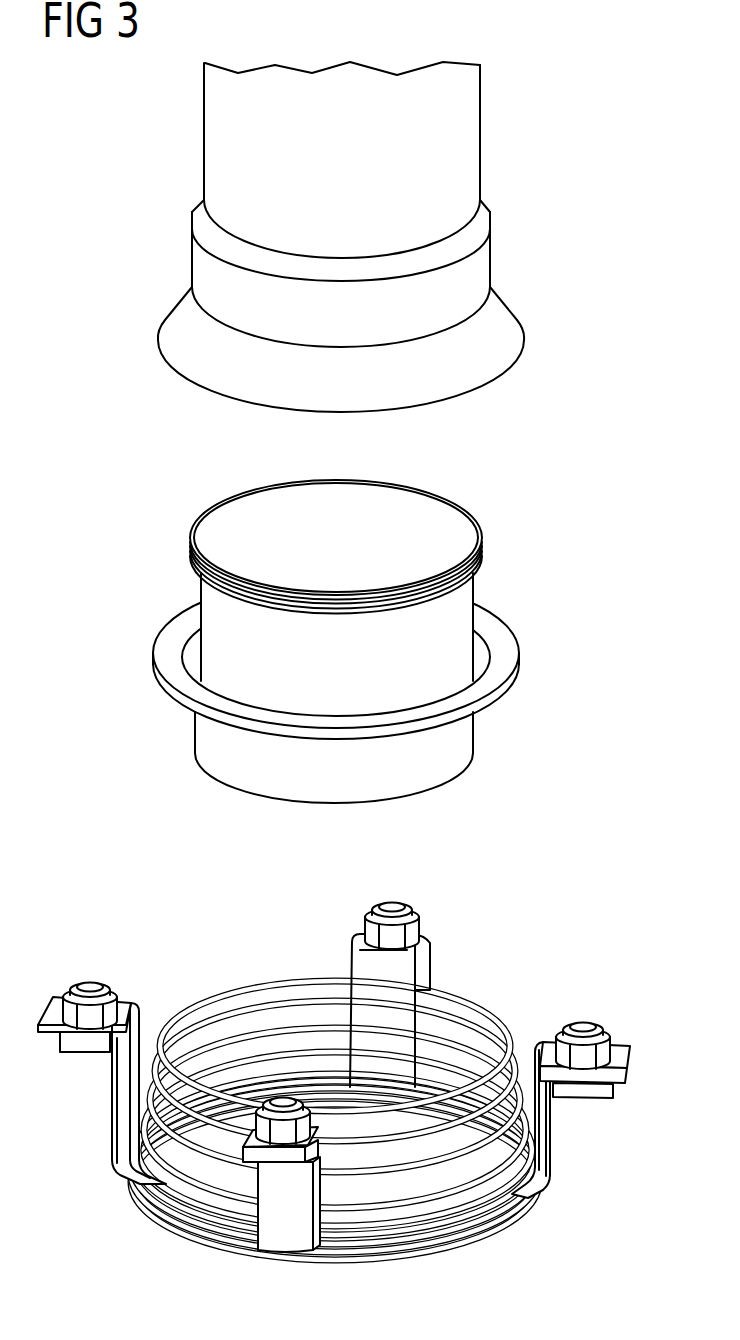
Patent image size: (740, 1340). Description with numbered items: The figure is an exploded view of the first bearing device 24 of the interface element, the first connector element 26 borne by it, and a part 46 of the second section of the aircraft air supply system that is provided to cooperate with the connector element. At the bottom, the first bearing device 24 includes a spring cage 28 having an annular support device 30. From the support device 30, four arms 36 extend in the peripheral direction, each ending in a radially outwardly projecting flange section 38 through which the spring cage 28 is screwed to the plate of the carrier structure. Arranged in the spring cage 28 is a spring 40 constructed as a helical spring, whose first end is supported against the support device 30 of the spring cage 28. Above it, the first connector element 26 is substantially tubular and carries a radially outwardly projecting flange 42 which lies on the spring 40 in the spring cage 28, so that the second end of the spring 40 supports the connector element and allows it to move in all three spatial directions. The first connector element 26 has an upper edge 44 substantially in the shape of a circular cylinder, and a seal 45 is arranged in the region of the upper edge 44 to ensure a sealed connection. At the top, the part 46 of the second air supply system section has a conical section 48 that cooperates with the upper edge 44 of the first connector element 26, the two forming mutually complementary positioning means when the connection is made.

The first bearing device 24 is at (338, 1076).
The first connector element 26 is at (357, 641).
The spring cage 28 is at (387, 1101).
The annular support device 30 is at (417, 1248).
The arms 36 is at (120, 1110).
The flange section 38 is at (62, 997).
The spring 40 is at (240, 983).
The flange 42 is at (505, 660).
The upper edge 44 is at (373, 580).
The seal 45 is at (335, 594).
The part of a second section of the air supply system 46 is at (470, 142).
The conical section 48 is at (498, 320).